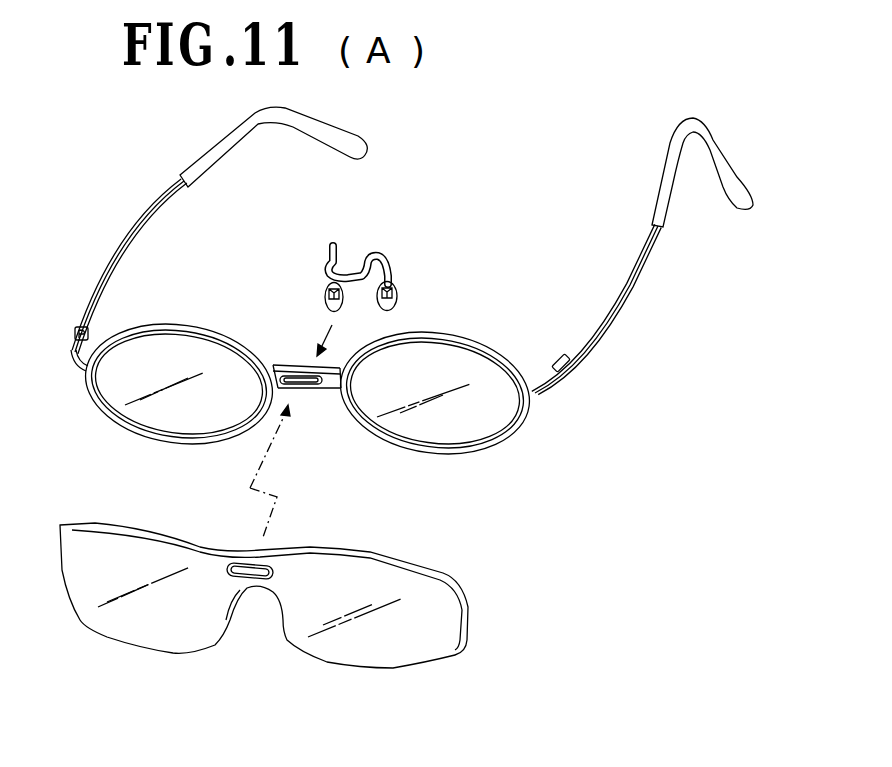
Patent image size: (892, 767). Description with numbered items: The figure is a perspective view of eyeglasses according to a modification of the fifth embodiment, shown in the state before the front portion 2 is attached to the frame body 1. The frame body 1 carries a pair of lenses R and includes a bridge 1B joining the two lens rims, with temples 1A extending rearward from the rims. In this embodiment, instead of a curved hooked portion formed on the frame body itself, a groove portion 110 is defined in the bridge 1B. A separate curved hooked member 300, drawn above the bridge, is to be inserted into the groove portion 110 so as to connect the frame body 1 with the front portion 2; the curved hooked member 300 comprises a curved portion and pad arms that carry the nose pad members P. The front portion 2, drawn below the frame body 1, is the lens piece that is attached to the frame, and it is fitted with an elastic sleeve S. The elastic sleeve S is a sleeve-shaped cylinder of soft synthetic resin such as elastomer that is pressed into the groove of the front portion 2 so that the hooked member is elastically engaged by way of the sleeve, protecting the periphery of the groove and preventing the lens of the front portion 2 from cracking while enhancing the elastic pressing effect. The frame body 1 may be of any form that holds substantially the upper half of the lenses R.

The frame body 1 is at (622, 305).
The temple 1A is at (608, 310).
The bridge 1B is at (325, 389).
The groove portion 110 is at (298, 386).
The lenses R is at (467, 428).
The curved hooked member 300 is at (382, 252).
The nose pad members P is at (400, 300).
The front portion 2 is at (423, 655).
The elastic sleeve S is at (275, 572).